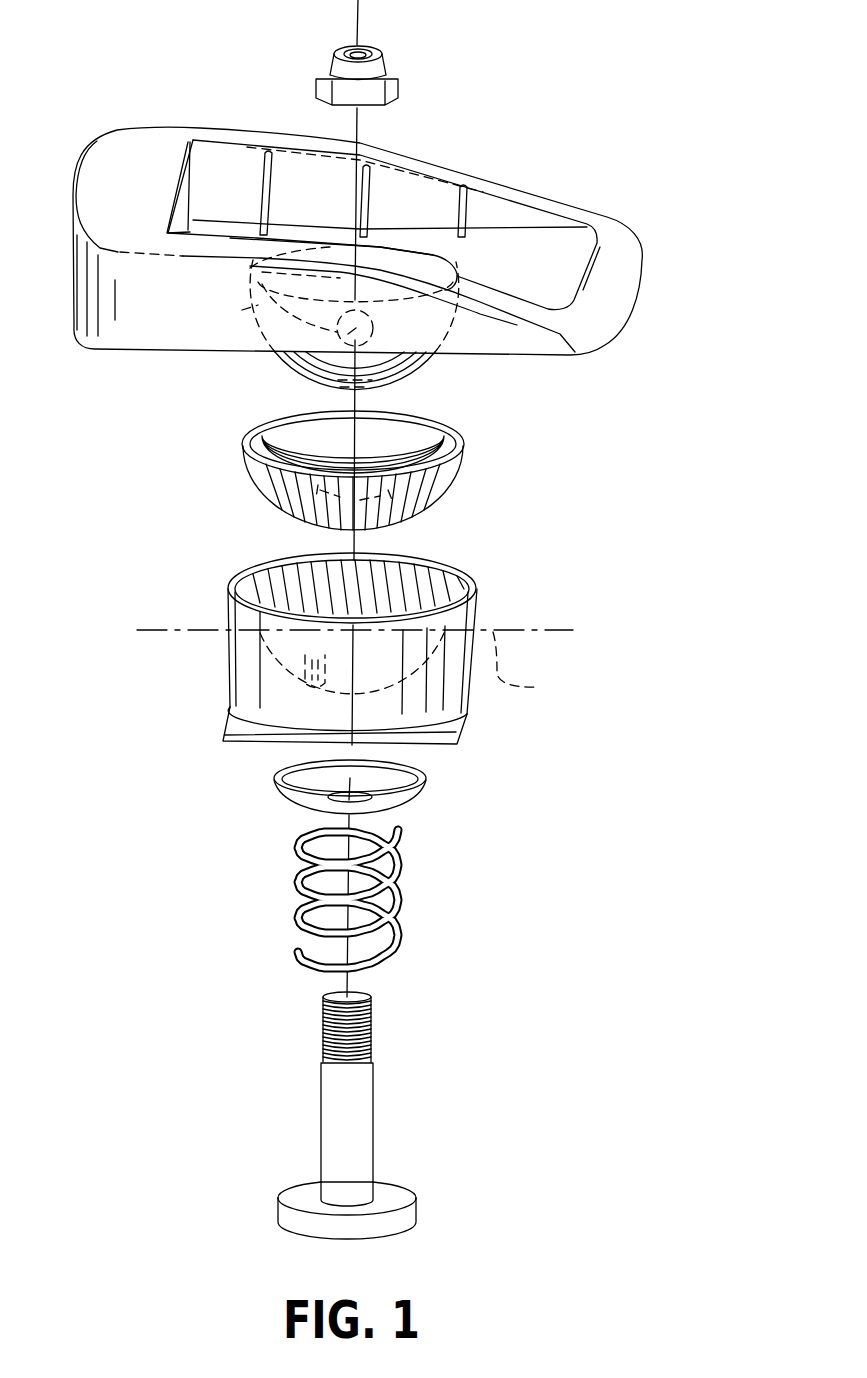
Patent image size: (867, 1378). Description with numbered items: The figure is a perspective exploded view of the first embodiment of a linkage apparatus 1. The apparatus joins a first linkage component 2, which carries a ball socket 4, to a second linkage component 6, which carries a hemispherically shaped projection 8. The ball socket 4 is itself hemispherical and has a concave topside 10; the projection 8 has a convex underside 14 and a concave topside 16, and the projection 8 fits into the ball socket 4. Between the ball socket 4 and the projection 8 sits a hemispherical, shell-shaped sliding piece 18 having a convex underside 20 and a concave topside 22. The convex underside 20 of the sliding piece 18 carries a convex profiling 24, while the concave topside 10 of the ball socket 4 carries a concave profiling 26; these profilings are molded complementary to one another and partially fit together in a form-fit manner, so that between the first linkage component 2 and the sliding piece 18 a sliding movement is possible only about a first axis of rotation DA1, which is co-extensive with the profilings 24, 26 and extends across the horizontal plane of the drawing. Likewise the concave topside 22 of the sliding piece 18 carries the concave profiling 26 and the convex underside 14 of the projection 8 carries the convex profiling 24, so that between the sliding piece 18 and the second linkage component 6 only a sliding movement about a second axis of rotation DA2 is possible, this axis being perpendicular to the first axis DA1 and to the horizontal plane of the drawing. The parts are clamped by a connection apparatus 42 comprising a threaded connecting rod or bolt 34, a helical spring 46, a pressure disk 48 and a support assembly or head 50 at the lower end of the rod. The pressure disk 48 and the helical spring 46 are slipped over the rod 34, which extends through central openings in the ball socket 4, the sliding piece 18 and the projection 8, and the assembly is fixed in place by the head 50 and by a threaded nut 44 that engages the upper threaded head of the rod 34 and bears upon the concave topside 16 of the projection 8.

The linkage apparatus 1 is at (537, 68).
The first linkage component 2 is at (496, 613).
The ball socket 4 is at (248, 687).
The second linkage component 6 is at (623, 253).
The hemispherically shaped projection 8 is at (280, 353).
The concave topside of the ball socket 10 is at (262, 571).
The convex underside of the projection 14 is at (411, 371).
The concave topside of the projection 16 is at (443, 270).
The sliding piece 18 is at (481, 468).
The convex underside of the sliding piece 20 is at (262, 493).
The concave topside of the sliding piece 22 is at (257, 433).
The convex profiling 24 is at (400, 380).
The concave profiling 26 is at (450, 425).
The threaded connecting rod 34 is at (327, 1102).
The connection apparatus 42 is at (416, 1172).
The threaded nut 44 is at (390, 90).
The helical spring 46 is at (400, 893).
The pressure disk 48 is at (393, 803).
The support assembly or head 50 is at (278, 1207).
The first axis of rotation DA1 is at (373, 667).
The second axis of rotation DA2 is at (275, 315).